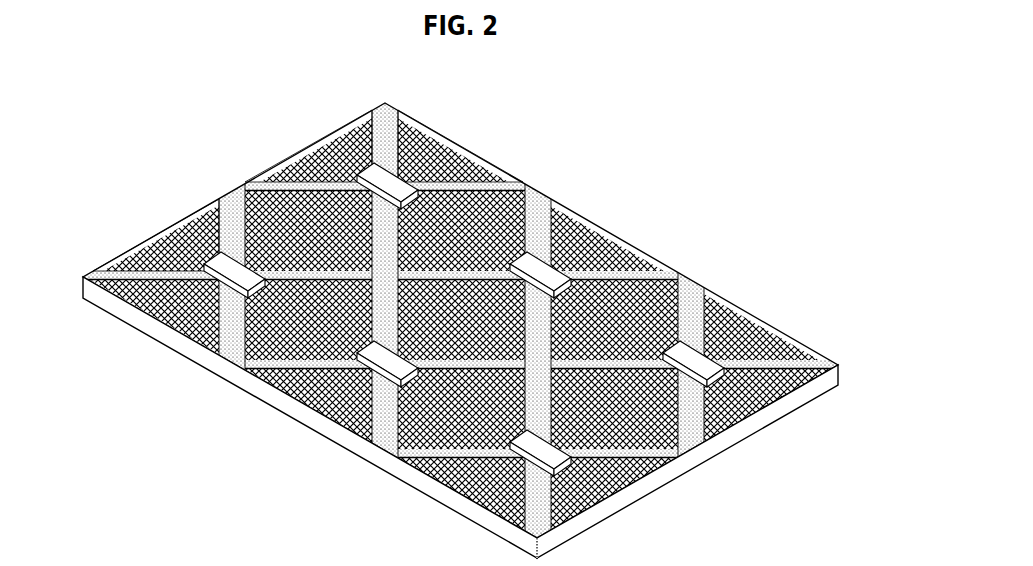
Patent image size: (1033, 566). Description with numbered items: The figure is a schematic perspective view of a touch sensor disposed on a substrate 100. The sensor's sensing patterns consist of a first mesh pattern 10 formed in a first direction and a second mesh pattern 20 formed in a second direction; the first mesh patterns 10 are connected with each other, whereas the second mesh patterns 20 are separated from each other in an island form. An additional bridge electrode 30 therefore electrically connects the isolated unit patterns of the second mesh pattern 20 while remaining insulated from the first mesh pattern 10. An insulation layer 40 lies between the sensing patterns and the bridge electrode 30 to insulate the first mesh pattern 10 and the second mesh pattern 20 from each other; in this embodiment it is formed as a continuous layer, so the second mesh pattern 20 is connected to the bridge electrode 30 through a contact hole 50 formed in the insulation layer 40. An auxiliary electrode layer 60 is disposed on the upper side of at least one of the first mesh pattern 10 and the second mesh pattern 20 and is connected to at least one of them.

The first mesh pattern 10 is at (477, 153).
The second mesh pattern 20 is at (528, 187).
The bridge electrode 30 is at (373, 168).
The insulation layer 40 is at (233, 195).
The contact hole 50 is at (187, 213).
The auxiliary electrode layer 60 is at (280, 161).
The substrate 100 is at (687, 463).